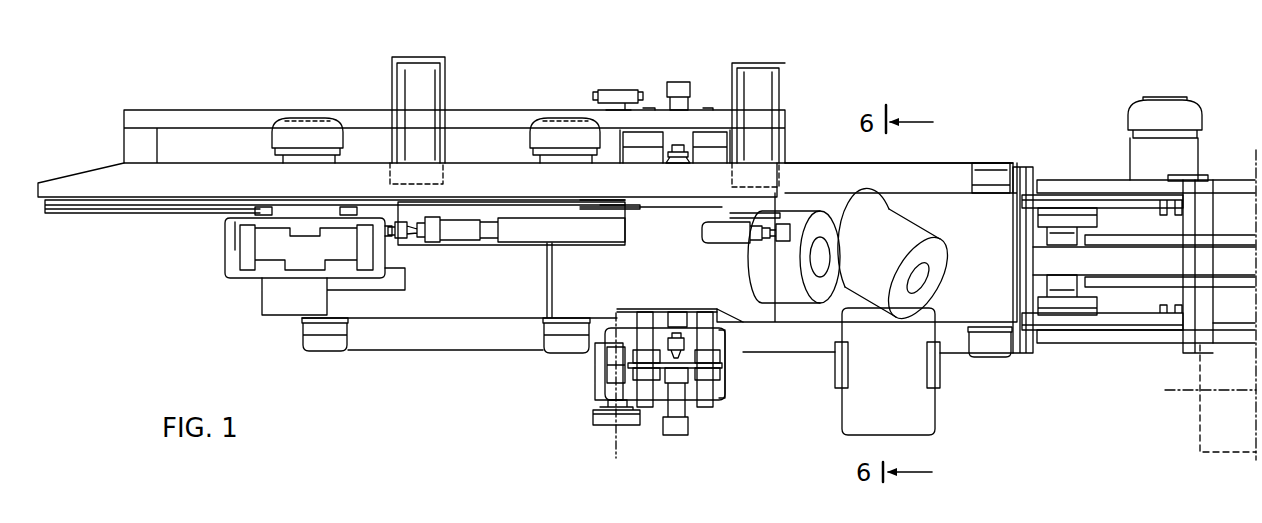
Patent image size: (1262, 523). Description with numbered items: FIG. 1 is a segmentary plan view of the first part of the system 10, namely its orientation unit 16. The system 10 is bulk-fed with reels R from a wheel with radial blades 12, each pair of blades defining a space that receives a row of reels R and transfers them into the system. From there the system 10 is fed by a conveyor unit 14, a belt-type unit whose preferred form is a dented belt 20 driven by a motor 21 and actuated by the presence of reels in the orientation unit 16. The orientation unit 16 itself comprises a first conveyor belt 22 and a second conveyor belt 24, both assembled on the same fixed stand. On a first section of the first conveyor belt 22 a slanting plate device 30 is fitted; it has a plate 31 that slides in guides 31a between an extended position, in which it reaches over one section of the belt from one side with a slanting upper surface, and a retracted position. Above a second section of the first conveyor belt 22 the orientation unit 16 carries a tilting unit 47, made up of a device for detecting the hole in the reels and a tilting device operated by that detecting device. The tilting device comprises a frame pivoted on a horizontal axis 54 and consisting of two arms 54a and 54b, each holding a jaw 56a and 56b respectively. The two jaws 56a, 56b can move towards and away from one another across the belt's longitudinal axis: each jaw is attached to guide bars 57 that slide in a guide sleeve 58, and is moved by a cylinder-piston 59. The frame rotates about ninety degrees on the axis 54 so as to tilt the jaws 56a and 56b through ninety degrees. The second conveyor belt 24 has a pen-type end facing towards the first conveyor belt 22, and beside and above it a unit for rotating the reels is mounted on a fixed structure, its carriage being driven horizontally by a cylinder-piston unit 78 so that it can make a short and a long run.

The system 10 is at (825, 95).
The wheel with radial blades 12 is at (1224, 432).
The conveyor unit 14 is at (1118, 165).
The orientation unit 16 is at (502, 78).
The dented belt 20 is at (1217, 262).
The motor 21 is at (1185, 118).
The first conveyor belt 22 is at (692, 278).
The second conveyor belt 24 is at (469, 290).
The slanting plate device 30 is at (948, 428).
The plate 31 is at (902, 383).
The guides 31a is at (840, 380).
The tilting unit 47 is at (710, 92).
The horizontal axis 54 is at (615, 443).
The arm 54a is at (722, 393).
The arm 54b is at (665, 147).
The jaw 56a is at (737, 296).
The jaw 56b is at (644, 208).
The guide bars 57 is at (645, 338).
The guide sleeve 58 is at (721, 368).
The cylinder-piston 59 is at (676, 426).
The cylinder-piston unit 78 is at (476, 228).
The reels R is at (867, 248).